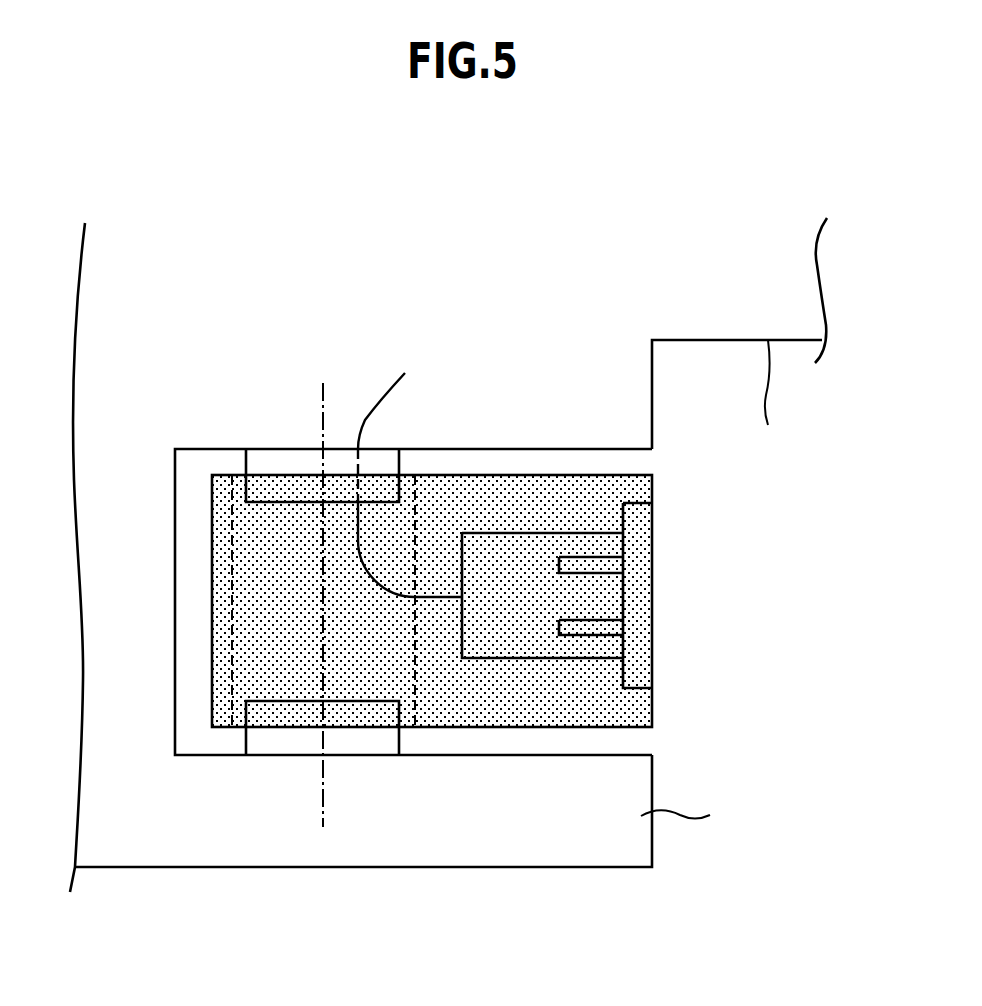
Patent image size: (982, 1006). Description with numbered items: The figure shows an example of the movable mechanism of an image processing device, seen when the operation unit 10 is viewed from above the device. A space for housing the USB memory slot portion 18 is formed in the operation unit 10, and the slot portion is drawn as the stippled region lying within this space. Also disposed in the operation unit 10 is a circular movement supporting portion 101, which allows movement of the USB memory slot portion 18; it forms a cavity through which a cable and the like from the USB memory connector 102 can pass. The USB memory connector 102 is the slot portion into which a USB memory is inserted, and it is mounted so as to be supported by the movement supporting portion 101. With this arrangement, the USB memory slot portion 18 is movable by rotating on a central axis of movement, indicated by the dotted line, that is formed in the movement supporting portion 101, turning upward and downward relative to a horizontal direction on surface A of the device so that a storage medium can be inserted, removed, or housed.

The operation unit 10 is at (815, 133).
The USB memory slot portion 18 is at (552, 493).
The movement supporting portion 101 is at (367, 745).
The USB memory connector 102 is at (588, 600).